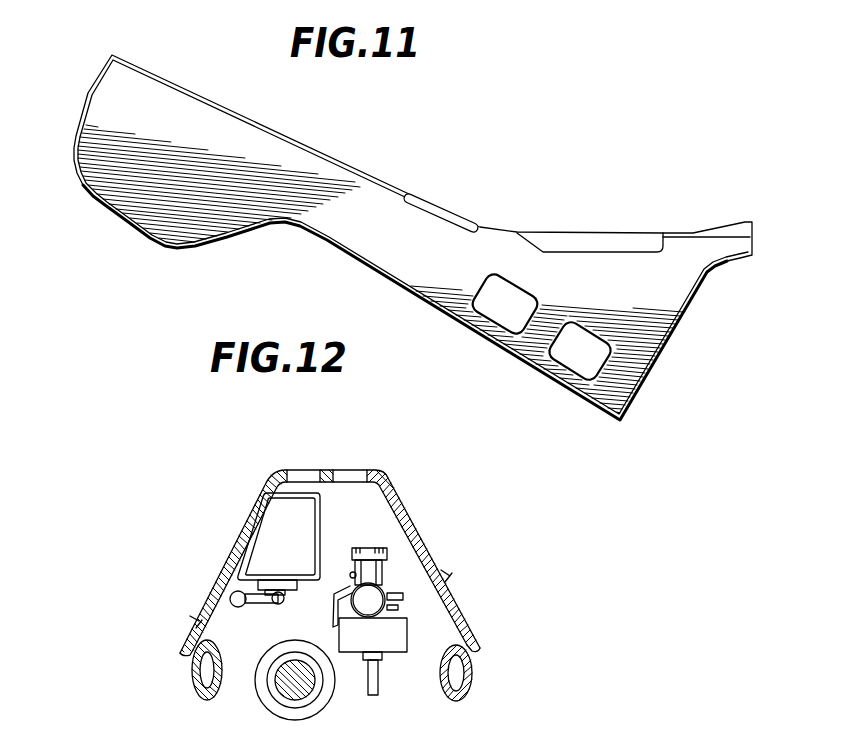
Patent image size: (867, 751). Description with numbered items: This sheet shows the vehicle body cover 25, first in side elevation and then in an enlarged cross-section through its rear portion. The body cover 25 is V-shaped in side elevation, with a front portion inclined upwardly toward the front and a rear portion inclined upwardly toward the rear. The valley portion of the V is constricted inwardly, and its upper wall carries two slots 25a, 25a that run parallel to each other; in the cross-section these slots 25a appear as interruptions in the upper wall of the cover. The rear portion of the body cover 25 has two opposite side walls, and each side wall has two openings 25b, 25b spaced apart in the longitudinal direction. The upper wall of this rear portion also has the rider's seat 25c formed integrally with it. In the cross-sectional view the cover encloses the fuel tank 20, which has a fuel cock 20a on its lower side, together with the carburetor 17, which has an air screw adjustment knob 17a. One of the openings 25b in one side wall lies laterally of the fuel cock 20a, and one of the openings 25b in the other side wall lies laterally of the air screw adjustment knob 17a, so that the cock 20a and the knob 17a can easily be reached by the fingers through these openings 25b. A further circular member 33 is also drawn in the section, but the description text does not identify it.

In FIG. 11, the body cover 25 is at (318, 142).
In FIG. 12, the body cover 25 is at (237, 502).
In FIG. 11, the slot 25a is at (427, 206).
In FIG. 12, the slot 25a is at (300, 472).
In FIG. 11, the opening 25b is at (485, 308).
In FIG. 12, the opening 25b is at (195, 618).
In FIG. 11, the rider's seat 25c is at (578, 243).
In FIG. 12, the fuel tank 20 is at (250, 550).
In FIG. 12, the fuel cock 20a is at (248, 592).
In FIG. 12, the carburetor 17 is at (362, 598).
In FIG. 12, the air screw adjustment knob 17a is at (403, 595).
In FIG. 12, the cylindrical member 33 is at (285, 689).